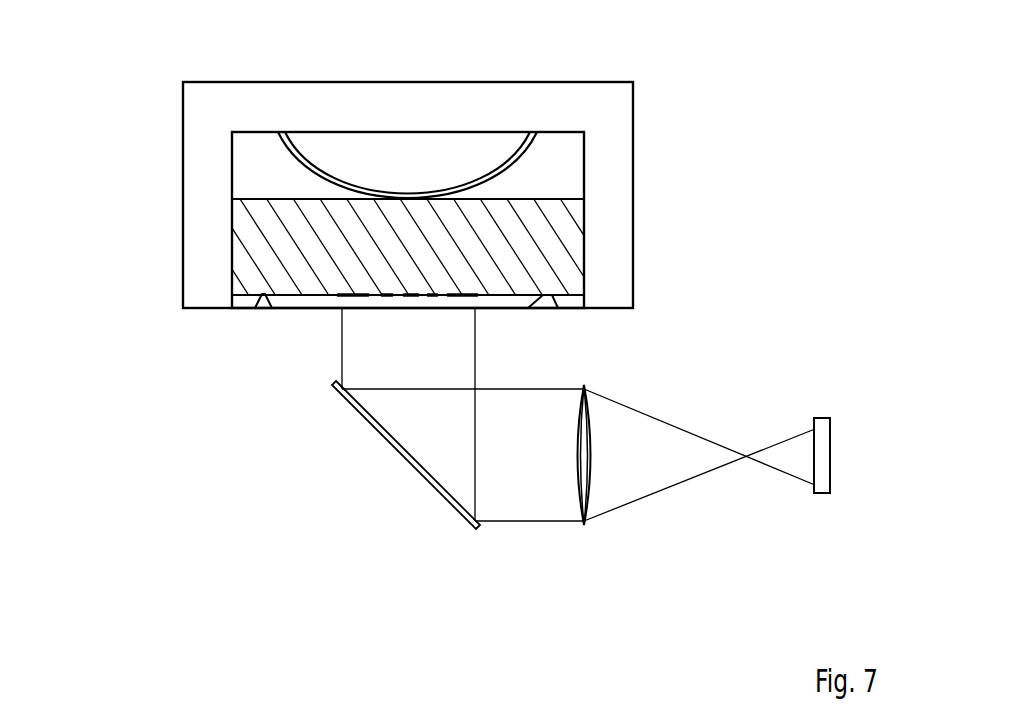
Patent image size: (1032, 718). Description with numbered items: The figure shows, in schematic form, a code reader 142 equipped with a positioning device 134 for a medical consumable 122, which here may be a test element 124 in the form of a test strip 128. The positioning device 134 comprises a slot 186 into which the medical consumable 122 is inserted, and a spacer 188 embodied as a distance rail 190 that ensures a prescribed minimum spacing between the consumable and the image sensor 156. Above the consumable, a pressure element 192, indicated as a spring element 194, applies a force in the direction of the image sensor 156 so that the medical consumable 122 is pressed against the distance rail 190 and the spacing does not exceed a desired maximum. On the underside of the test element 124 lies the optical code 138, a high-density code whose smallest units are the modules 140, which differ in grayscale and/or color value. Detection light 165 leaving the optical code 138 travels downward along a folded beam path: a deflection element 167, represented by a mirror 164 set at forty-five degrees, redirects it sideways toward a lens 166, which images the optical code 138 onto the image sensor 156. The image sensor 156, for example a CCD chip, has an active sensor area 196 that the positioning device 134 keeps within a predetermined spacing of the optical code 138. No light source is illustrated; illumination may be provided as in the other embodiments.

The code reader 142 is at (737, 113).
The positioning device 134 is at (426, 206).
The slot 186 is at (232, 252).
The pressure element 192 is at (426, 111).
The spring element 194 is at (497, 168).
The medical consumable 122 is at (481, 240).
The test element 124 is at (481, 240).
The test strip 128 is at (565, 225).
The spacer 188 is at (529, 271).
The distance rail 190 is at (530, 293).
The optical code 138 is at (382, 298).
The modules 140 is at (430, 297).
The detection light 165 is at (475, 355).
The mirror 164 is at (375, 455).
The deflection element 167 is at (402, 460).
The lens 166 is at (591, 493).
The image sensor 156 is at (820, 418).
The active sensor area 196 is at (808, 450).